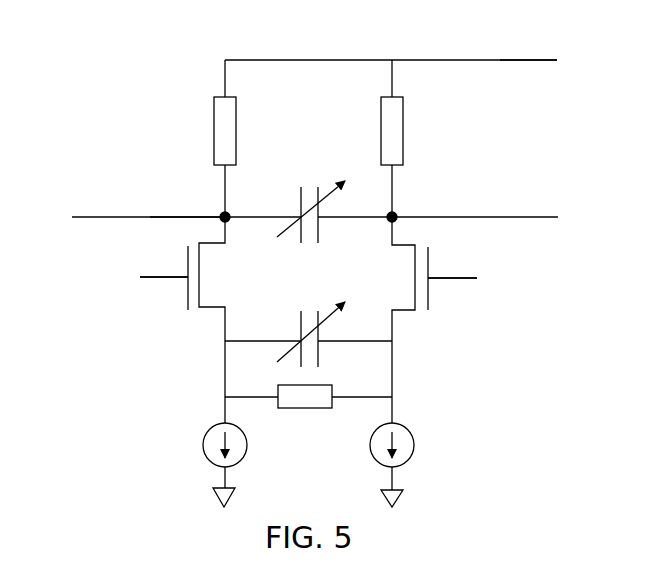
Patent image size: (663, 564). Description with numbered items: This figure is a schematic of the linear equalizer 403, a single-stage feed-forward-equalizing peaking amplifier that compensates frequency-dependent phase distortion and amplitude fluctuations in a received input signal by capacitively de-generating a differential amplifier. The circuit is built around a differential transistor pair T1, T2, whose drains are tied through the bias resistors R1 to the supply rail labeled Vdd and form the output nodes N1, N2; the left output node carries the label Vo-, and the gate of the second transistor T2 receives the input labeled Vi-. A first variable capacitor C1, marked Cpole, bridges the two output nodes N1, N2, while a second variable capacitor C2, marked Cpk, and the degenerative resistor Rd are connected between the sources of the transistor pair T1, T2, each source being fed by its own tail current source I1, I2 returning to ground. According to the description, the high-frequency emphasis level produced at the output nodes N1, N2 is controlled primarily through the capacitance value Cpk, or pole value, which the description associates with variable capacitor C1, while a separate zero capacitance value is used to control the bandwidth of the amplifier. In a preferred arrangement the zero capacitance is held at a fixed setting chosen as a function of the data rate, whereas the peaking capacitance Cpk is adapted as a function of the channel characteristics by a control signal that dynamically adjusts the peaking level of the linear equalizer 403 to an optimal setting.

The linear equalizer 403 is at (331, 33).
The bias resistors R1 is at (308, 138).
The variable capacitor C1 is at (308, 182).
The variable capacitor C2 is at (308, 315).
The pole capacitance Cpole is at (341, 226).
The capacitance value Cpk is at (339, 352).
The degenerative resistor Rd is at (308, 413).
The differential pair transistor T1 is at (188, 294).
The differential pair transistor T2 is at (428, 293).
The tail current source I1 is at (203, 440).
The tail current source I2 is at (408, 430).
The output node N1 is at (136, 208).
The output node N2 is at (487, 208).
The supply voltage Vdd is at (551, 51).
The negative output voltage Vo- is at (187, 201).
The negative input voltage Vi- is at (464, 265).